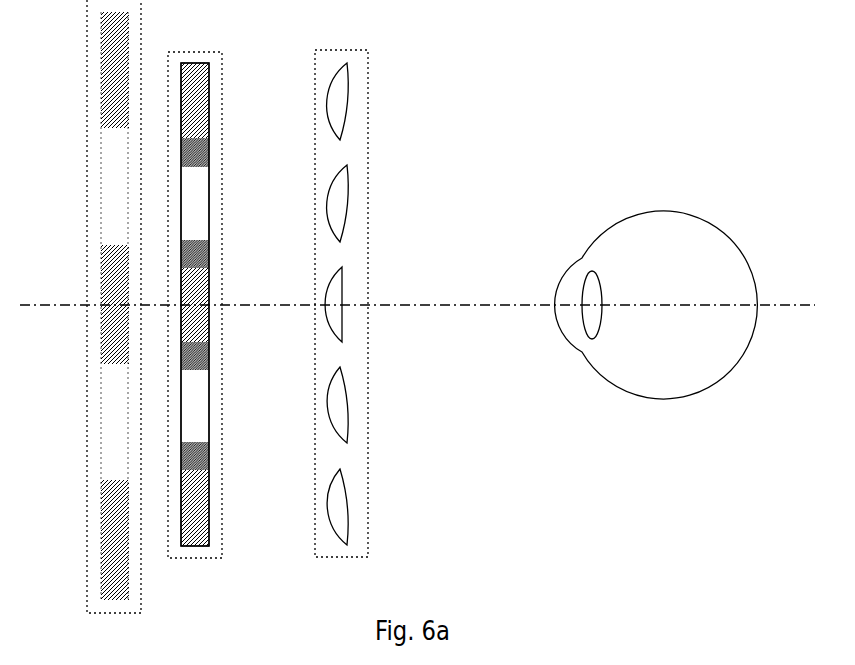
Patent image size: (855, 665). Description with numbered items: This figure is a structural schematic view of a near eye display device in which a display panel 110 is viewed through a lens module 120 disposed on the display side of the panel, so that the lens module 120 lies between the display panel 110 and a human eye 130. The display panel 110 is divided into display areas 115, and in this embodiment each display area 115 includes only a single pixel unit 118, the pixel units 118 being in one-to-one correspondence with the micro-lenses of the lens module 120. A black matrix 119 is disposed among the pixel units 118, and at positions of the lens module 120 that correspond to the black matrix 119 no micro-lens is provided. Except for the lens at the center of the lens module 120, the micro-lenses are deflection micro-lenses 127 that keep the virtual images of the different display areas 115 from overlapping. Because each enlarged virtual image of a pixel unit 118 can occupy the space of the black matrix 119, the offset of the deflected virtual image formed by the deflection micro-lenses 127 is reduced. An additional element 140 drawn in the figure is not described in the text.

The display panel 110 is at (238, 305).
The display area 115 is at (259, 329).
The pixel unit 118 is at (195, 304).
The black matrix 119 is at (236, 304).
The lens module 120 is at (384, 288).
The deflection micro-lens 127 is at (379, 507).
The human eye 130 is at (656, 287).
The backlight illumination source 140 is at (150, 306).